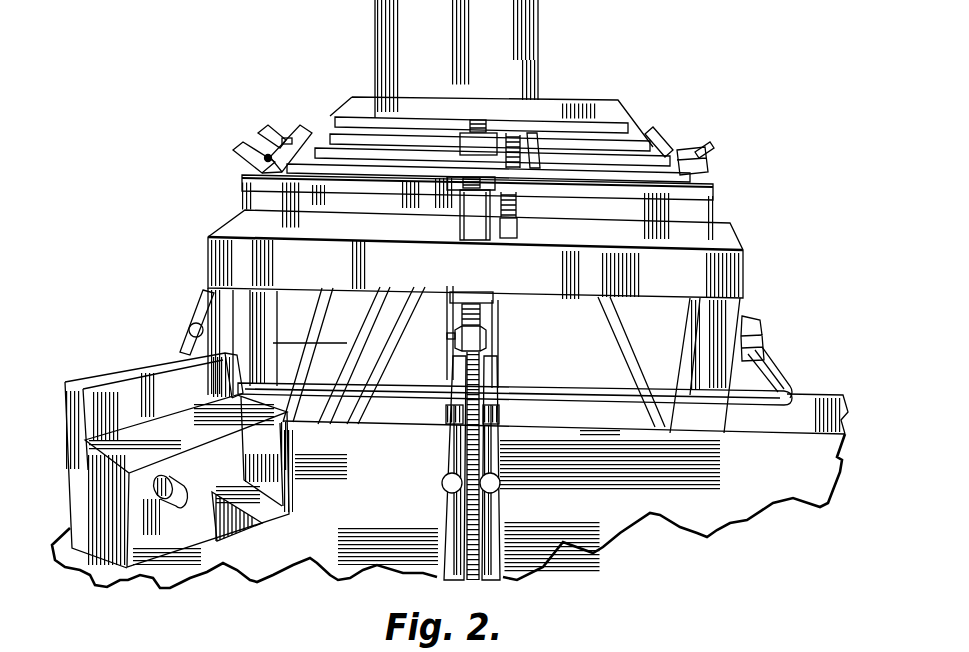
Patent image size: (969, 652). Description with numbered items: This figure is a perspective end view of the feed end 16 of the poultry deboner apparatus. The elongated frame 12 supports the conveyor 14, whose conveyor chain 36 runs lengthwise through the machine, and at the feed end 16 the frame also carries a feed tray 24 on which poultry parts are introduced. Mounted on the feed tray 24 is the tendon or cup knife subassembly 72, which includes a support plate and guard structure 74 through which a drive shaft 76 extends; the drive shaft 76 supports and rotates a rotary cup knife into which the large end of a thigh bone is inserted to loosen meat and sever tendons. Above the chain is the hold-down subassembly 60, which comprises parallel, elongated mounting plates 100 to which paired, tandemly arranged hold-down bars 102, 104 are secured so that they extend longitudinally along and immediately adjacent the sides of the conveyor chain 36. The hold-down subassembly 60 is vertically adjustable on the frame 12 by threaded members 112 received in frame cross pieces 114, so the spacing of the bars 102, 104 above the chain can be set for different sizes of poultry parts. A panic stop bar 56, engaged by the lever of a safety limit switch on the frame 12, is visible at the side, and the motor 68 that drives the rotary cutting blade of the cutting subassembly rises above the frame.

The frame 12 is at (196, 245).
The conveyor 14 is at (503, 362).
The feed end 16 is at (767, 279).
The feed tray 24 is at (697, 500).
The conveyor chain 36 is at (481, 410).
The panic stop bar 56 is at (763, 362).
The hold-down subassembly 60 is at (510, 323).
The motor 68 is at (400, 52).
The tendon or cup knife subassembly 72 is at (121, 365).
The support plate and guard structure 74 is at (84, 446).
The drive shaft 76 is at (181, 494).
The support or mounting plates 100 is at (443, 386).
The hold-down bar 102 is at (448, 449).
The hold-down bar 104 is at (495, 458).
The threaded members 112 is at (478, 118).
The frame cross pieces 114 is at (488, 143).